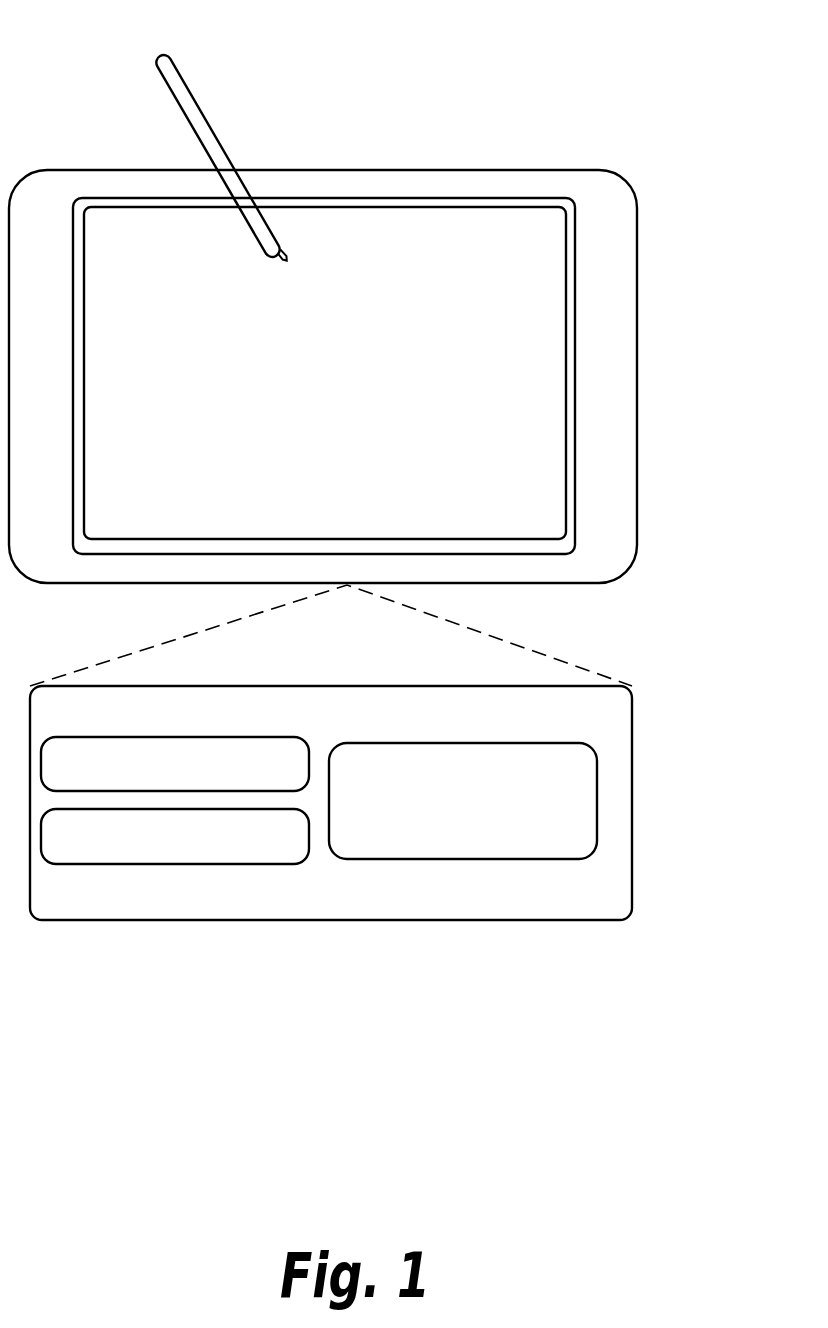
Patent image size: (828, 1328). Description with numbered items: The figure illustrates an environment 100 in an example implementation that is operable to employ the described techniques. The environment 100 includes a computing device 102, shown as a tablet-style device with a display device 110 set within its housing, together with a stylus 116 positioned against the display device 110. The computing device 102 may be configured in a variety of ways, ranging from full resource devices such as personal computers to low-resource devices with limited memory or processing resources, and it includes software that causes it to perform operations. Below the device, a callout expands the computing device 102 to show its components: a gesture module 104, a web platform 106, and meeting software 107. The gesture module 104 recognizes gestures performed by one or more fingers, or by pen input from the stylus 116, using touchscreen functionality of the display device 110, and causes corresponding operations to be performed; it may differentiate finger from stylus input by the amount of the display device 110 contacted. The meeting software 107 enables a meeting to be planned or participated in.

The environment 100 is at (637, 80).
The computing device 102 is at (452, 719).
The gesture module 104 is at (283, 773).
The web platform 106 is at (271, 844).
The meeting software 107 is at (483, 803).
The display device 110 is at (547, 236).
The stylus 116 is at (166, 45).